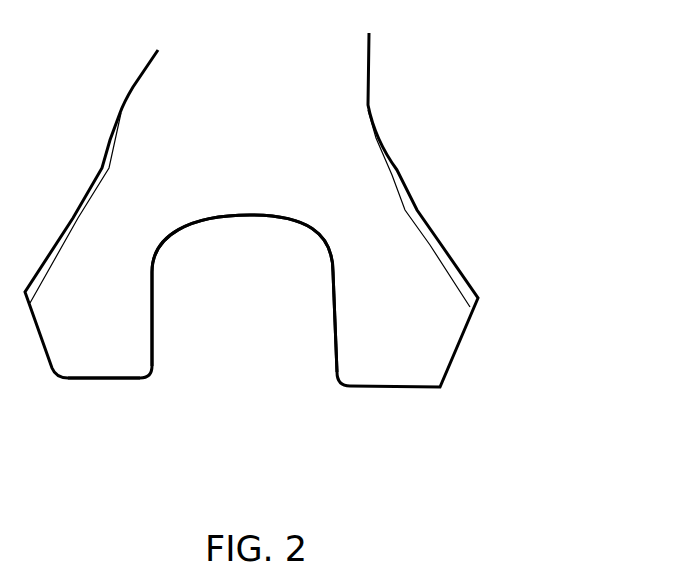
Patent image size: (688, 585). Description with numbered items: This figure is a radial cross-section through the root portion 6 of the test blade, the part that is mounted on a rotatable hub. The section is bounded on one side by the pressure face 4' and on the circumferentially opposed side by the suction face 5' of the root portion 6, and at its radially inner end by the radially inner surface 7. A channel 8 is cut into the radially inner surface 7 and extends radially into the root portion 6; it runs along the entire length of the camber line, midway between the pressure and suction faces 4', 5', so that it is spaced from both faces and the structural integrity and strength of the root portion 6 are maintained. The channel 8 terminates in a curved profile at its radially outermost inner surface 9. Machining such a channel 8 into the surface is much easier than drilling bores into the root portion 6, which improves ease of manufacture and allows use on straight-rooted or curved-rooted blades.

The pressure face of the root portion 4' is at (67, 208).
The suction face of the root portion 5' is at (430, 208).
The root portion 6 is at (552, 165).
The radially inner surface 7 is at (100, 383).
The channel 8 is at (213, 338).
The radially outermost inner surface 9 is at (250, 207).